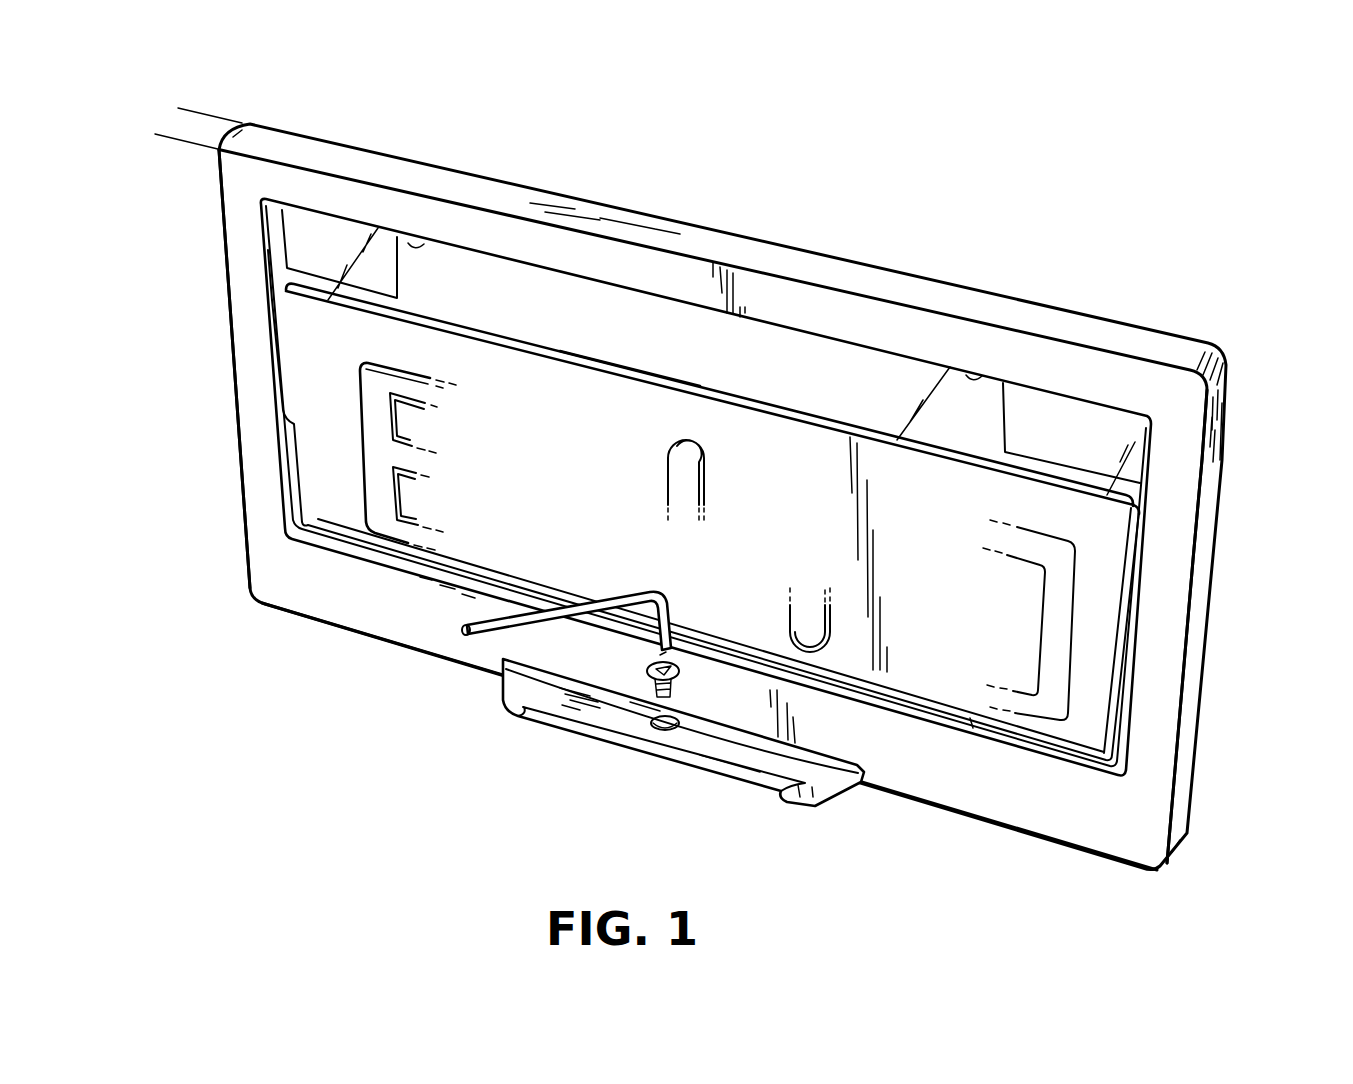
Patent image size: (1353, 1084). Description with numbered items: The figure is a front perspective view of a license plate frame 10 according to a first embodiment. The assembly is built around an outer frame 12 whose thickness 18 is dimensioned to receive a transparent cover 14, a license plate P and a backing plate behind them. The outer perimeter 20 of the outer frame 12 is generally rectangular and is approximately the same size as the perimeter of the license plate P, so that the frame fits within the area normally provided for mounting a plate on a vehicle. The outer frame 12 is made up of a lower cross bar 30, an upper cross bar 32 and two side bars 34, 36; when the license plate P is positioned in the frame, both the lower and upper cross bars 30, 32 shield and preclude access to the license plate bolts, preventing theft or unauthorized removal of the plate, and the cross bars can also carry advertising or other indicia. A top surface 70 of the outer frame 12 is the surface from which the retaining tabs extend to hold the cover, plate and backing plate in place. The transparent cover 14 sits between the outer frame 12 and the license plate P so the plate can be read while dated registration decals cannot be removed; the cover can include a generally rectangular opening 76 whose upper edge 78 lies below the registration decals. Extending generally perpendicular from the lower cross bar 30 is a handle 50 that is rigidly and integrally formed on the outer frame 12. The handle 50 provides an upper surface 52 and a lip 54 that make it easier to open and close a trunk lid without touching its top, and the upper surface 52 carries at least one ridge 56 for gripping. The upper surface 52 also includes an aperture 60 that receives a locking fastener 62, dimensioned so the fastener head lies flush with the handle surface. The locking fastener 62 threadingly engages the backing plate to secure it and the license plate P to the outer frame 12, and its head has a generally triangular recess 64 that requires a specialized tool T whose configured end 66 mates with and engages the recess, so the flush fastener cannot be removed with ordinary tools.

The license plate frame 10 is at (1027, 268).
The outer frame 12 is at (464, 170).
The transparent cover 14 is at (821, 392).
The thickness 18 is at (182, 137).
The outer perimeter 20 is at (1180, 790).
The lower cross bar 30 is at (377, 617).
The upper cross bar 32 is at (752, 292).
The side bar 34 is at (1163, 606).
The side bar 36 is at (247, 365).
The handle 50 is at (671, 776).
The upper surface 52 is at (557, 690).
The lip 54 is at (747, 773).
The ridge 56 is at (722, 752).
The aperture 60 is at (664, 728).
The locking fastener 62 is at (652, 693).
The recess 64 is at (671, 664).
The configured end 66 is at (673, 650).
The top surface 70 is at (673, 237).
The opening 76 is at (297, 443).
The upper edge 78 is at (626, 377).
The license plate P is at (347, 517).
The tool T is at (603, 602).